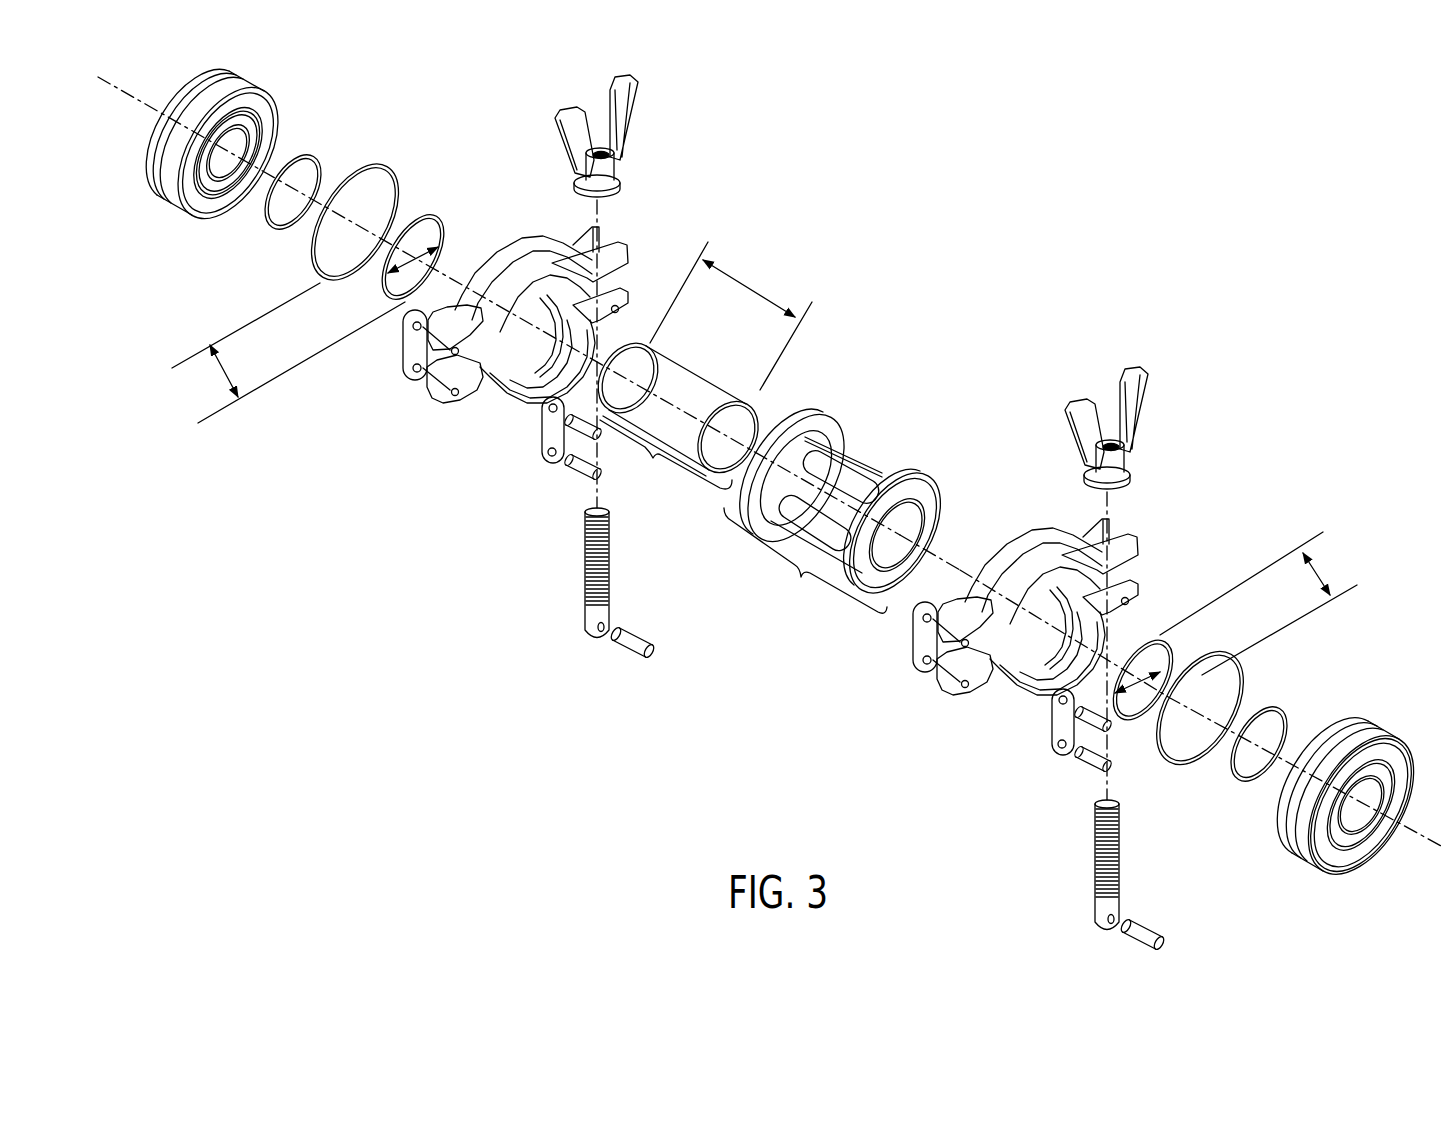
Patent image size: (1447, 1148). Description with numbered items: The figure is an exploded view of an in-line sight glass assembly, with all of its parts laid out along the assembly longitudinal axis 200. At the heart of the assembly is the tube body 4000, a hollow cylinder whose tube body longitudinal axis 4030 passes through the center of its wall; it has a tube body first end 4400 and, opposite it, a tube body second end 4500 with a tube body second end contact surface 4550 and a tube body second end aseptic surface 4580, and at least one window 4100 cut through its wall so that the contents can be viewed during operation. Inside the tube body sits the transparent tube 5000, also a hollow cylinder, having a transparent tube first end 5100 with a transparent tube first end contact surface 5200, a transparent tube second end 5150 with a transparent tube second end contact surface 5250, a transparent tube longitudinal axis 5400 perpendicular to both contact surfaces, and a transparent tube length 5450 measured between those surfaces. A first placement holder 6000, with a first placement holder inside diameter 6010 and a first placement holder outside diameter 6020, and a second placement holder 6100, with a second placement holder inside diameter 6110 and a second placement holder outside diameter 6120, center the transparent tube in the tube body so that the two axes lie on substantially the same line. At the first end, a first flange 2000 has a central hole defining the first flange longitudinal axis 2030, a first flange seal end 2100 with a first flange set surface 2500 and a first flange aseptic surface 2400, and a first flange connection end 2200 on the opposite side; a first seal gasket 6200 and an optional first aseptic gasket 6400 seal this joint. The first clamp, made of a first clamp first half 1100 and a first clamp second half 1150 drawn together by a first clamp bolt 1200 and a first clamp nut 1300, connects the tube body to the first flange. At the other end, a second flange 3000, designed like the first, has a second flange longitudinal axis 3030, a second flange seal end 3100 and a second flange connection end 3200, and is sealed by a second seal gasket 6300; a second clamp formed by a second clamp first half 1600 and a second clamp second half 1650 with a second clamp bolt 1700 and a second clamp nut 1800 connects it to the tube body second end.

The assembly longitudinal axis 200 is at (117, 104).
The first flange 2000 is at (231, 172).
The first flange longitudinal axis 2030 is at (243, 150).
The first flange set surface 2500 is at (258, 140).
The first flange connection end 2200 is at (142, 174).
The first flange aseptic surface 2400 is at (190, 197).
The first flange seal end 2100 is at (202, 222).
The first seal gasket 6200 is at (280, 238).
The first aseptic gasket 6400 is at (390, 160).
The first placement holder inside diameter 6010 is at (413, 235).
The first placement holder 6000 is at (437, 224).
The first placement holder outside diameter 6020 is at (218, 372).
The first clamp nut 1300 is at (633, 123).
The first clamp first half 1100 is at (528, 240).
The first clamp second half 1150 is at (513, 413).
The first clamp bolt 1200 is at (577, 598).
The transparent tube 5000 is at (707, 389).
The transparent tube first end 5100 is at (627, 347).
The transparent tube first end contact surface 5200 is at (640, 375).
The transparent tube longitudinal axis 5400 is at (728, 437).
The transparent tube second end 5150 is at (760, 403).
The transparent tube length 5450 is at (750, 293).
The transparent tube second end contact surface 5250 is at (730, 485).
The tube body 4000 is at (868, 511).
The tube body first end 4400 is at (817, 408).
The window 4100 is at (840, 480).
The tube body second end contact surface 4550 is at (930, 503).
The tube body second end aseptic surface 4580 is at (933, 493).
The tube body longitudinal axis 4030 is at (952, 573).
The tube body second end 4500 is at (882, 617).
The second clamp first half 1600 is at (1032, 533).
The second clamp second half 1650 is at (1021, 701).
The second clamp bolt 1700 is at (1091, 883).
The second clamp nut 1800 is at (1150, 397).
The second placement holder 6100 is at (1172, 642).
The second placement holder inside diameter 6110 is at (1143, 665).
The second placement holder outside diameter 6120 is at (1318, 575).
The second seal gasket 6300 is at (1253, 781).
The second flange 3000 is at (1328, 797).
The second flange longitudinal axis 3030 is at (1368, 800).
The second flange seal end 3100 is at (1276, 829).
The second flange connection end 3200 is at (1339, 870).